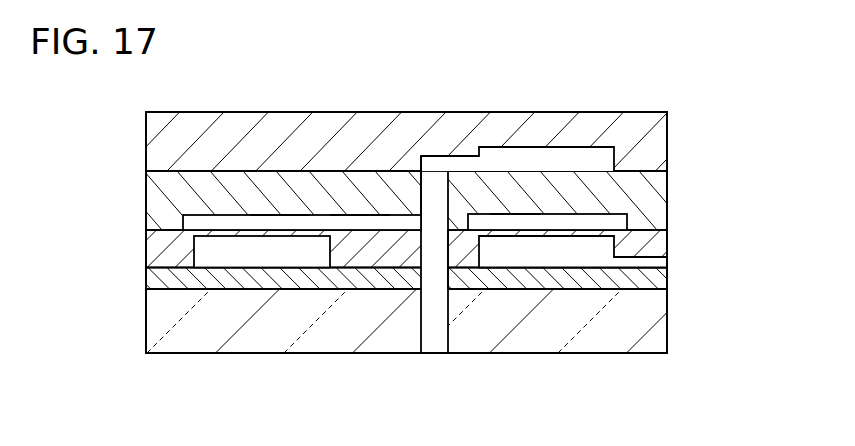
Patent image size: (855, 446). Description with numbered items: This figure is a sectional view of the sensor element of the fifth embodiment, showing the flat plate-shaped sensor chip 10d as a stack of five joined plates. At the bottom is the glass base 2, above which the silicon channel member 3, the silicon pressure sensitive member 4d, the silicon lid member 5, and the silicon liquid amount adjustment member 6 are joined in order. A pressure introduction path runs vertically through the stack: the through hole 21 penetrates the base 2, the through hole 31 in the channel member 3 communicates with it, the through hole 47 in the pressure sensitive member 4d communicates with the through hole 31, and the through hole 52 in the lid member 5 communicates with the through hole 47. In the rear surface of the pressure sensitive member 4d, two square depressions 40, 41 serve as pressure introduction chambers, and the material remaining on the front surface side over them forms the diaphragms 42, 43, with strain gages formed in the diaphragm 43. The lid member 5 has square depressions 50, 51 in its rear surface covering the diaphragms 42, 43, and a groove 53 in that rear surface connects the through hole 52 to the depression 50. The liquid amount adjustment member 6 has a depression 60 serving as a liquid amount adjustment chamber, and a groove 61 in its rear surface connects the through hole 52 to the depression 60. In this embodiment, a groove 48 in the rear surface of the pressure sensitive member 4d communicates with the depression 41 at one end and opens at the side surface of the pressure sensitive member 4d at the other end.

The sensor chip 10d is at (127, 353).
The base 2 is at (660, 325).
The channel member 3 is at (660, 278).
The pressure sensitive member 4d is at (660, 245).
The lid member 5 is at (660, 200).
The liquid amount adjustment member 6 is at (660, 143).
The through hole 21 is at (437, 343).
The through hole 31 is at (442, 278).
The depression 40 is at (245, 258).
The depression 41 is at (573, 258).
The diaphragm 42 is at (220, 235).
The diaphragm 43 is at (555, 228).
The through hole 47 is at (442, 245).
The groove 48 is at (641, 265).
The depression 50 is at (278, 220).
The depression 51 is at (512, 220).
The through hole 52 is at (407, 162).
The groove 53 is at (357, 222).
The depression 60 is at (600, 155).
The groove 61 is at (440, 163).